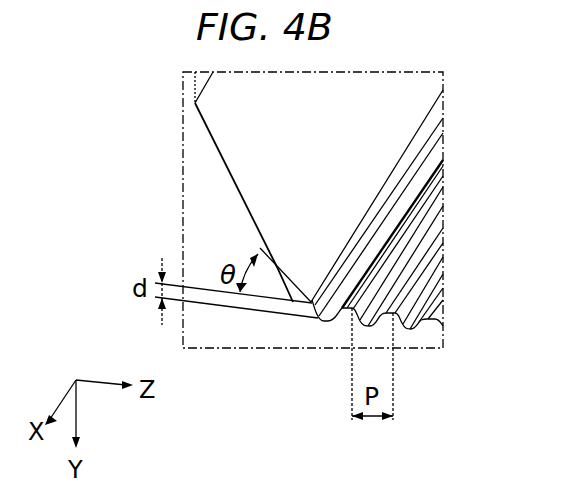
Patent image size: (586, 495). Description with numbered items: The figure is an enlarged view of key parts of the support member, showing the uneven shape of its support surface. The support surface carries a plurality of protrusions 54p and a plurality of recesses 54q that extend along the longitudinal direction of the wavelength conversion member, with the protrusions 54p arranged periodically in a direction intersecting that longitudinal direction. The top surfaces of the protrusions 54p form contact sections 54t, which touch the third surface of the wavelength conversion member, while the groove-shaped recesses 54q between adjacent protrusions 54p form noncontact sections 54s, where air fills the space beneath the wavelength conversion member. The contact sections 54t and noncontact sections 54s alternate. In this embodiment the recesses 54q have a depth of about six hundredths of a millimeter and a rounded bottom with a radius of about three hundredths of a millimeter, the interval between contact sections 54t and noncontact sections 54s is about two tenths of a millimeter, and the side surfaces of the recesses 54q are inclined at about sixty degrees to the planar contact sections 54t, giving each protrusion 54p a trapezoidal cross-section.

The recesses 54q is at (342, 268).
The noncontact sections 54s is at (400, 208).
The contact sections 54t is at (417, 212).
The protrusions 54p is at (408, 270).